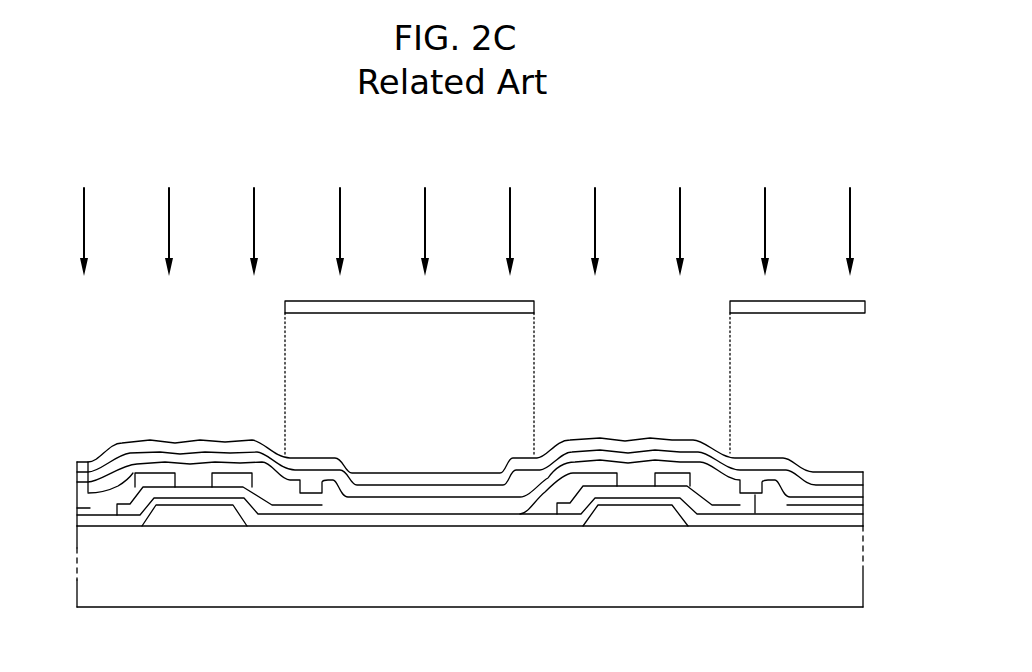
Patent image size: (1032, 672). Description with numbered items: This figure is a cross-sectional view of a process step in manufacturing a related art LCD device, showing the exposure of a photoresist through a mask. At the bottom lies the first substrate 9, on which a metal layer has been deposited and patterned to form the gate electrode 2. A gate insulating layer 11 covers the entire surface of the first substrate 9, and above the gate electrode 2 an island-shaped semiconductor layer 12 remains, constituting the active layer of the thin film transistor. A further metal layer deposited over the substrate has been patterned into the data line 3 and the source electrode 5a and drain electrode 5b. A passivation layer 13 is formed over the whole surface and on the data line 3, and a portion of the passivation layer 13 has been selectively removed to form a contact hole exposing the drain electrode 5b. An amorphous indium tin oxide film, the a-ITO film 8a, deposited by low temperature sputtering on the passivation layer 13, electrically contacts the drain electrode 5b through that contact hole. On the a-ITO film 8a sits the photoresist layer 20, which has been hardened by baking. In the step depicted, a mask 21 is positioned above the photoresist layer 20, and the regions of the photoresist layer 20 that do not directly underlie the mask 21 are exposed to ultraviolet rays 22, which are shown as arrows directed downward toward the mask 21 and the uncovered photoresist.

The gate electrode 2 is at (185, 524).
The data line 3 is at (86, 508).
The source electrode 5a is at (150, 481).
The drain electrode 5b is at (290, 504).
The a-ITO film 8a is at (392, 488).
The first substrate 9 is at (858, 566).
The gate insulating layer 11 is at (857, 518).
The semiconductor layer 12 is at (206, 494).
The passivation layer 13 is at (91, 489).
The photoresist layer 20 is at (678, 455).
The mask 21 is at (858, 308).
The ultraviolet rays 22 is at (850, 228).